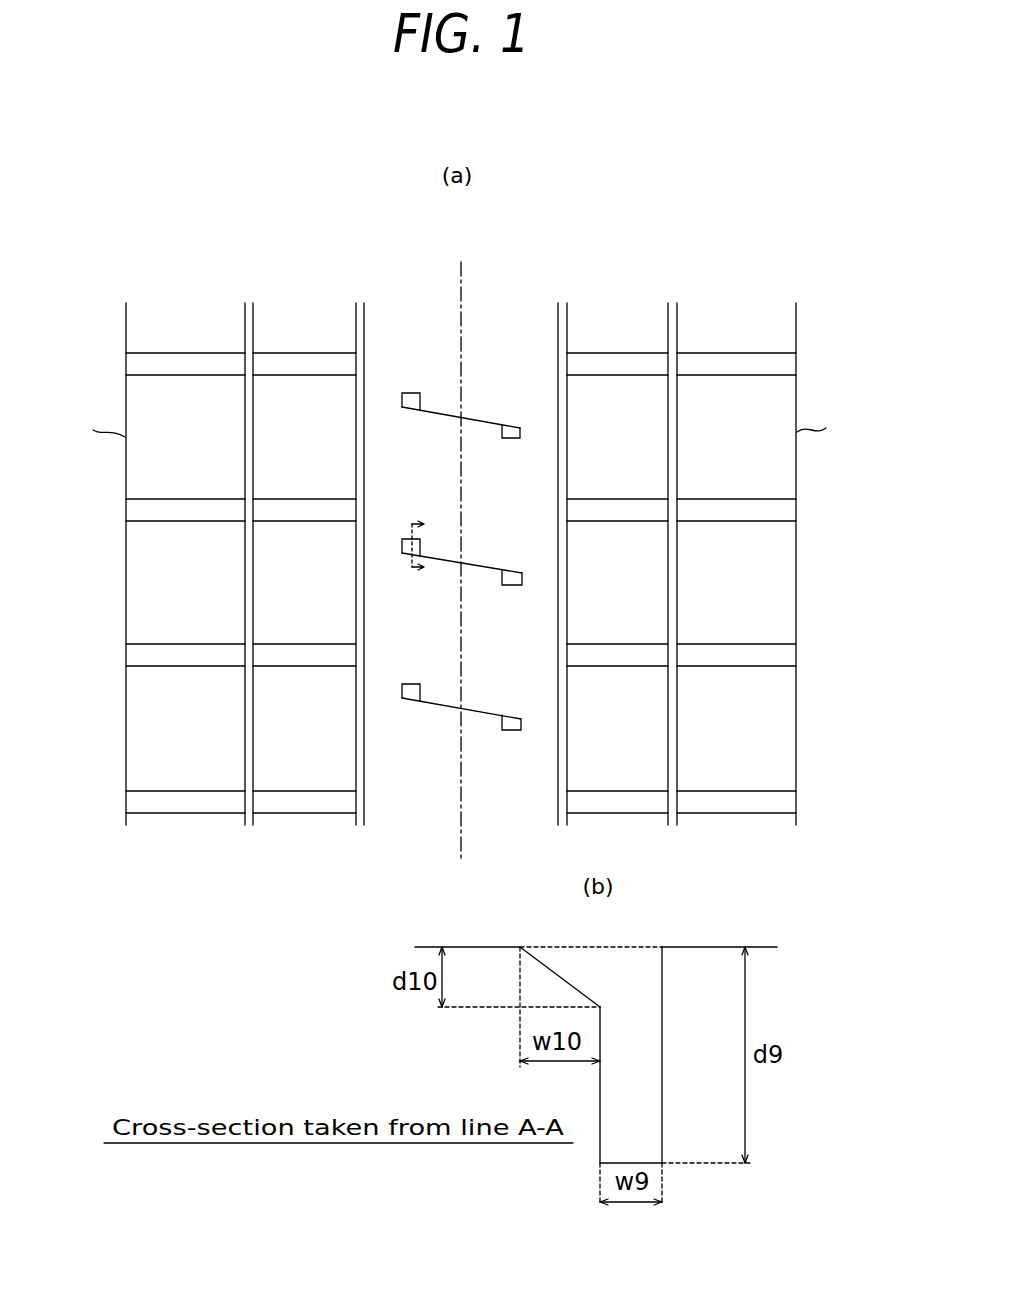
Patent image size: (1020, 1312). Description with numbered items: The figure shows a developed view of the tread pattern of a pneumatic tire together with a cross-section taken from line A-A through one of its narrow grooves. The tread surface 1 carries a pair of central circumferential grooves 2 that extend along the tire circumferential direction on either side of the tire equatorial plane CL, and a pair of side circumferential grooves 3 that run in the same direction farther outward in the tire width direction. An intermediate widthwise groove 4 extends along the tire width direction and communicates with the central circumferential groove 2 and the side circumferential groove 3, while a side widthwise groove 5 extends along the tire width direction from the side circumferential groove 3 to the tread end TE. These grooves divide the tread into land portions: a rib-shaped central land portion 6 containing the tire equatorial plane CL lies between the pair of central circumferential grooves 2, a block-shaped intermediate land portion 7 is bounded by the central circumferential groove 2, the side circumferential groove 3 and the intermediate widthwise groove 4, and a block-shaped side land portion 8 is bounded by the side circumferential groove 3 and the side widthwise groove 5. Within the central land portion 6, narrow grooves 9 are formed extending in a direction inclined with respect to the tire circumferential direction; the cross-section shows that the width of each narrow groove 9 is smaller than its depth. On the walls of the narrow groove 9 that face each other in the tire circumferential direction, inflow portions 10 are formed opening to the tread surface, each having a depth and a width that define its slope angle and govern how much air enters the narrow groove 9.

The tread surface 1 is at (772, 256).
The central circumferential groove 2 is at (357, 312).
The side circumferential groove 3 is at (245, 312).
The intermediate widthwise groove 4 is at (305, 365).
The side widthwise groove 5 is at (187, 365).
The central land portion 6 is at (489, 312).
The intermediate land portion 7 is at (300, 312).
The side land portion 8 is at (181, 312).
The narrow groove 9 is at (470, 418).
The inflow portion 10 is at (410, 397).